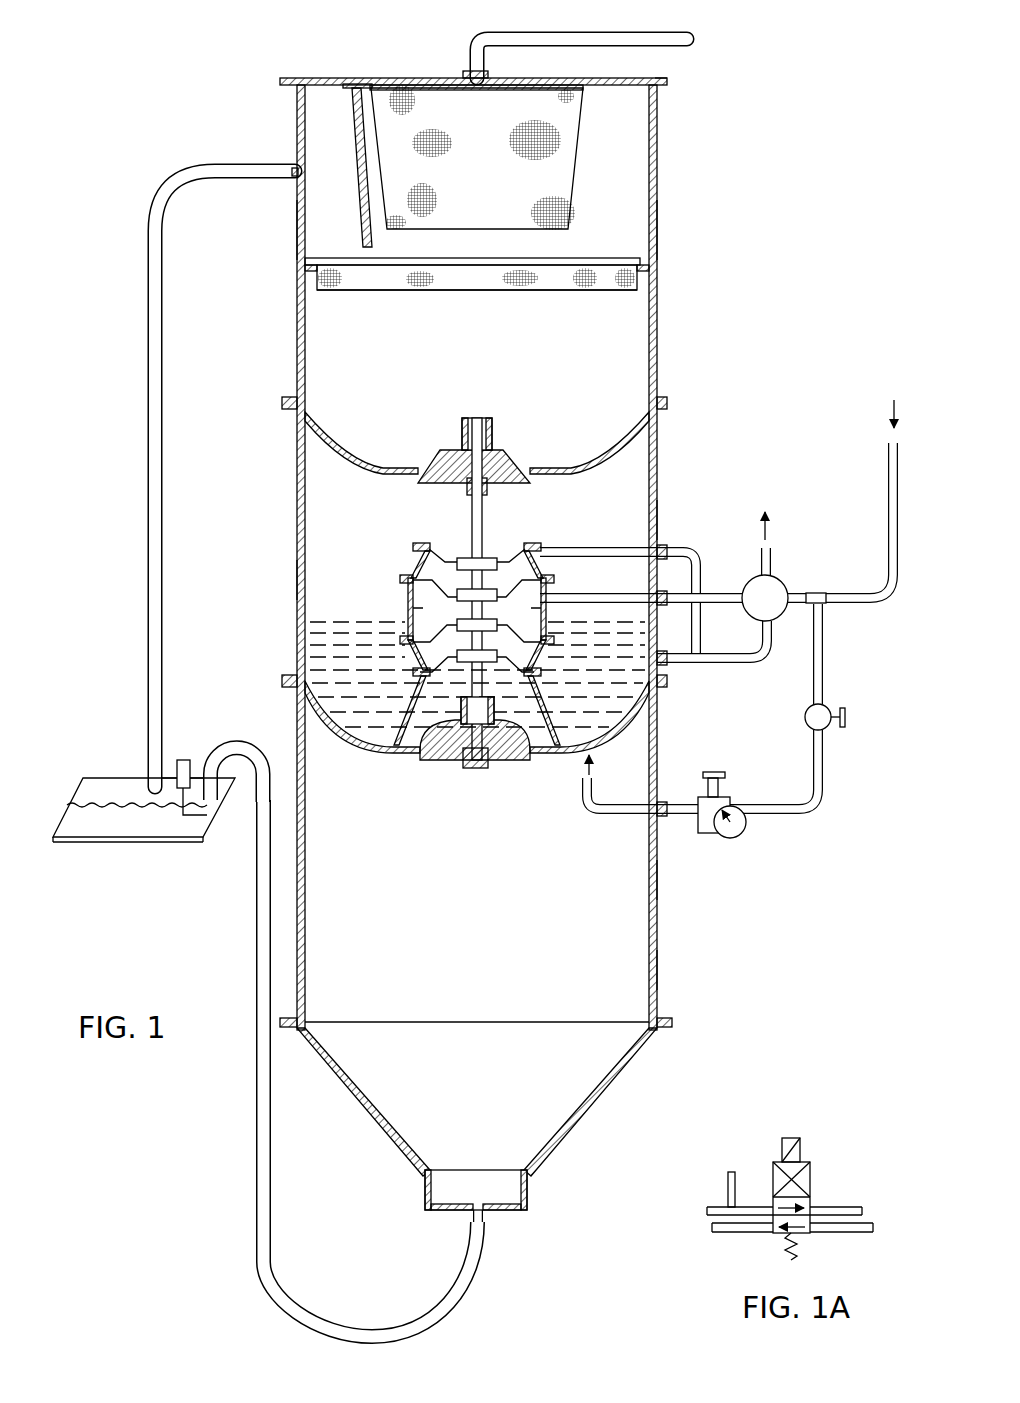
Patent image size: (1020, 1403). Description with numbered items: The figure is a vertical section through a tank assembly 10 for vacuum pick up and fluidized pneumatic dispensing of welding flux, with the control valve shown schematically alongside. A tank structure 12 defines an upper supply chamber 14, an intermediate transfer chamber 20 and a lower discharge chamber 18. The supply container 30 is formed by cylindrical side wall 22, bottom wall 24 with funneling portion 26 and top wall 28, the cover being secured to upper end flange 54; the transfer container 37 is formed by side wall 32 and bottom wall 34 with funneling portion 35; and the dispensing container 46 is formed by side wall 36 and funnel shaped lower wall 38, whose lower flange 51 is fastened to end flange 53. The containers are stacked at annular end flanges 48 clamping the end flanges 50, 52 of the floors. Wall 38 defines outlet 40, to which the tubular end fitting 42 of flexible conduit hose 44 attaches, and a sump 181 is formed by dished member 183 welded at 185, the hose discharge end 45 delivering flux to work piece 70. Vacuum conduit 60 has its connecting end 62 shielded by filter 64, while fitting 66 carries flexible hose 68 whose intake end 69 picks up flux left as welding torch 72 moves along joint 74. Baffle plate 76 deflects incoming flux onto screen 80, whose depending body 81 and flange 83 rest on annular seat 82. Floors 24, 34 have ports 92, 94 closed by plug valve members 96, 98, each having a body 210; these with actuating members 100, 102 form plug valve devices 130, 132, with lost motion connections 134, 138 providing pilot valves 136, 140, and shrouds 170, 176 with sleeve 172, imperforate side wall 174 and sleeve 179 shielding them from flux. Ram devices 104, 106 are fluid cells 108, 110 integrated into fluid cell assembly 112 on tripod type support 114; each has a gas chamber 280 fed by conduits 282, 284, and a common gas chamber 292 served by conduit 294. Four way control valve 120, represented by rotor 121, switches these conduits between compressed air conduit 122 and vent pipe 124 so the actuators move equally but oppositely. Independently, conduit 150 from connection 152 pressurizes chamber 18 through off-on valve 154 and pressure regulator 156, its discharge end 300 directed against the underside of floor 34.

In FIG. 1, the tank assembly 10 is at (790, 178).
In FIG. 1, the tank structure 12 is at (660, 157).
In FIG. 1, the supply chamber 14 is at (655, 330).
In FIG. 1, the discharge chamber 18 is at (660, 930).
In FIG. 1, the transfer chamber 20 is at (655, 490).
In FIG. 1, the cylindrical side wall 22 is at (657, 243).
In FIG. 1, the bottom wall 24 is at (636, 415).
In FIG. 1, the funneling portion 26 is at (418, 465).
In FIG. 1, the top wall 28 is at (322, 77).
In FIG. 1, the supply container 30 is at (295, 238).
In FIG. 1, the cylindrical side wall 32 is at (657, 515).
In FIG. 1, the bottom wall 34 is at (655, 712).
In FIG. 1, the funneling portion 35 is at (402, 722).
In FIG. 1, the cylindrical side wall 36 is at (657, 880).
In FIG. 1, the transfer container 37 is at (295, 583).
In FIG. 1, the funnel shaped lower wall 38 is at (592, 1105).
In FIG. 1, the outlet 40 is at (493, 1205).
In FIG. 1, the tubular end fitting 42 is at (480, 1205).
In FIG. 1, the flexible conduit hose 44 is at (484, 1268).
In FIG. 1, the discharge end 45 is at (216, 808).
In FIG. 1, the dispensing container 46 is at (660, 975).
In FIG. 1, the annular end flanges 48 is at (668, 398).
In FIG. 1, the end flange 50 is at (670, 405).
In FIG. 1, the lower flange 51 is at (672, 1022).
In FIG. 1, the end flange 52 is at (282, 681).
In FIG. 1, the end flange 53 is at (668, 1030).
In FIG. 1, the upper end flange 54 is at (668, 83).
In FIG. 1, the conduit 60 is at (617, 36).
In FIG. 1, the connecting end 62 is at (495, 75).
In FIG. 1, the filter 64 is at (570, 176).
In FIG. 1, the fitting 66 is at (303, 172).
In FIG. 1, the flexible hose 68 is at (195, 170).
In FIG. 1, the intake end 69 is at (150, 785).
In FIG. 1, the work piece 70 is at (142, 842).
In FIG. 1, the welding torch 72 is at (185, 757).
In FIG. 1, the joint 74 is at (192, 815).
In FIG. 1, the baffle plate 76 is at (365, 150).
In FIG. 1, the screen 80 is at (313, 284).
In FIG. 1, the depending body 81 is at (456, 278).
In FIG. 1, the annular seat 82 is at (648, 272).
In FIG. 1, the flange 83 is at (575, 262).
In FIG. 1, the port 92 is at (440, 460).
In FIG. 1, the port 94 is at (426, 771).
In FIG. 1, the plug valve member 96 is at (526, 459).
In FIG. 1, the plug valve member 98 is at (448, 772).
In FIG. 1, the actuating member 100 is at (482, 526).
In FIG. 1, the actuating member 102 is at (541, 680).
In FIG. 1, the ram device 104 is at (395, 567).
In FIG. 1, the ram device 106 is at (400, 670).
In FIG. 1, the fluid cell 108 is at (416, 557).
In FIG. 1, the fluid cell 110 is at (427, 657).
In FIG. 1, the fluid cell assembly 112 is at (397, 600).
In FIG. 1, the tripod type support 114 is at (402, 713).
In FIG. 1, the four way control valve 120 is at (793, 573).
In FIG. 1A, the four way control valve 120 is at (810, 1132).
In FIG. 1, the rotor 121 is at (745, 585).
In FIG. 1, the conduit 122 is at (892, 486).
In FIG. 1A, the conduit 122 is at (850, 1233).
In FIG. 1, the vent pipe 124 is at (773, 560).
In FIG. 1A, the vent pipe 124 is at (847, 1207).
In FIG. 1, the plug valve device 130 is at (535, 437).
In FIG. 1, the plug valve device 132 is at (567, 758).
In FIG. 1, the lost motion connection 134 is at (466, 492).
In FIG. 1, the pilot valve 136 is at (490, 455).
In FIG. 1, the lost motion connection 138 is at (498, 768).
In FIG. 1, the pilot valve 140 is at (466, 732).
In FIG. 1, the conduit 150 is at (825, 683).
In FIG. 1, the connection 152 is at (822, 592).
In FIG. 1, the off-on valve 154 is at (823, 729).
In FIG. 1, the pressure regulator 156 is at (735, 795).
In FIG. 1, the shroud 170 is at (500, 412).
In FIG. 1, the sleeve 172 is at (477, 416).
In FIG. 1, the imperforate side wall 174 is at (497, 455).
In FIG. 1, the shroud 176 is at (540, 750).
In FIG. 1, the sleeve 179 is at (463, 708).
In FIG. 1, the sump 181 is at (445, 1190).
In FIG. 1, the dished member 183 is at (528, 1202).
In FIG. 1, the weld 185 is at (430, 1170).
In FIG. 1, the body 210 is at (455, 455).
In FIG. 1, the gas chamber 280 is at (527, 555).
In FIG. 1, the conduit 282 is at (603, 549).
In FIG. 1A, the conduit 282 is at (728, 1180).
In FIG. 1, the conduit 284 is at (590, 666).
In FIG. 1A, the conduit 284 is at (712, 1207).
In FIG. 1, the common gas chamber 292 is at (400, 623).
In FIG. 1, the conduit 294 is at (590, 598).
In FIG. 1A, the conduit 294 is at (732, 1233).
In FIG. 1, the discharge end 300 is at (587, 800).